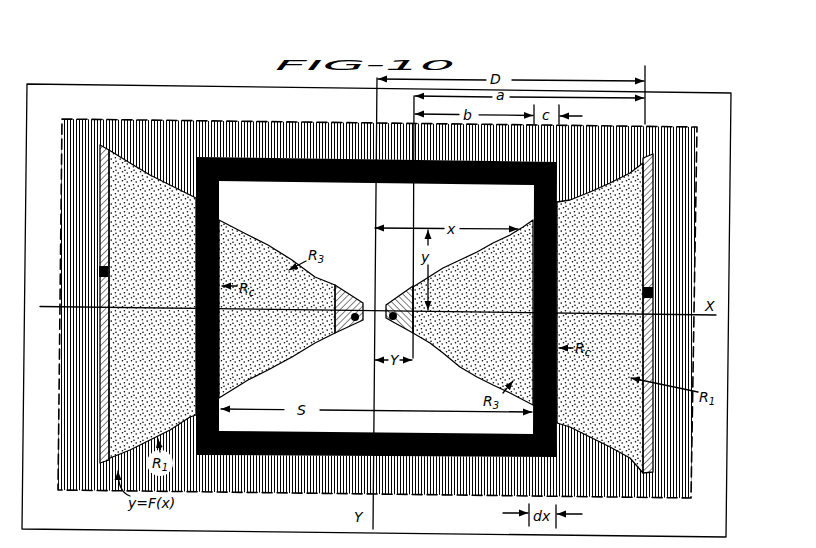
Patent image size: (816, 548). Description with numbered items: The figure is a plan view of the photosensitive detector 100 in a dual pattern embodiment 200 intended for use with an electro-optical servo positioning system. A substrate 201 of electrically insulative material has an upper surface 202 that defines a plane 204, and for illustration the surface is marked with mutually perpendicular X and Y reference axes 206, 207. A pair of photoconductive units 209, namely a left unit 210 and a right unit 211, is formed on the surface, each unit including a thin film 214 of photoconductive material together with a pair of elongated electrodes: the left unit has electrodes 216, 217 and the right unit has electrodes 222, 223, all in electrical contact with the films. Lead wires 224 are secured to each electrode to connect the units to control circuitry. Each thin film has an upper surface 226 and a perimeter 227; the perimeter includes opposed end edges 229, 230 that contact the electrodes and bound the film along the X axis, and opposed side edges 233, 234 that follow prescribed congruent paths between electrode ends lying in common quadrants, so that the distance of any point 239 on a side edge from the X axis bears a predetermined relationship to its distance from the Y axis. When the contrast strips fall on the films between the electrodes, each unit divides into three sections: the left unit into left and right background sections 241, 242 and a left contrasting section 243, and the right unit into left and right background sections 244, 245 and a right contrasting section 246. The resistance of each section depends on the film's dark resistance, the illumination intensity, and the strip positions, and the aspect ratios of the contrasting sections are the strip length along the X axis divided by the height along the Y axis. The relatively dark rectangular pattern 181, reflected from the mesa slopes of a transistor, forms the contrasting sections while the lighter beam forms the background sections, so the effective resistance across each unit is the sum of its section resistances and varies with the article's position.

The photosensitive detector 100 is at (47, 76).
The dual pattern embodiment 200 is at (84, 81).
The substrate 201 is at (153, 84).
The upper surface 202 is at (192, 95).
The plane 204 is at (246, 111).
The rectangular pattern 181 is at (277, 157).
The thin film 214 is at (126, 173).
The electrode 223 is at (655, 213).
The lead wires 224 is at (99, 271).
The X reference axis 206 is at (51, 303).
The Y reference axis 207 is at (376, 513).
The left background section 241 is at (117, 240).
The electrode 216 is at (105, 373).
The end edge 229 is at (100, 416).
The left contrasting section 243 is at (194, 348).
The side edge 233 is at (585, 207).
The right contrasting section 246 is at (559, 297).
The side edge 234 is at (573, 437).
The right background section 245 is at (627, 466).
The end edge 230 is at (341, 289).
The electrode 222 is at (405, 298).
The electrode 217 is at (338, 341).
The upper surface 226 is at (240, 244).
The right background section 242 is at (248, 227).
The perimeter 227 is at (258, 250).
The point 239 is at (520, 230).
The left background section 244 is at (454, 292).
The photoconductive units 209 is at (288, 365).
The left unit 210 is at (253, 388).
The right unit 211 is at (476, 378).